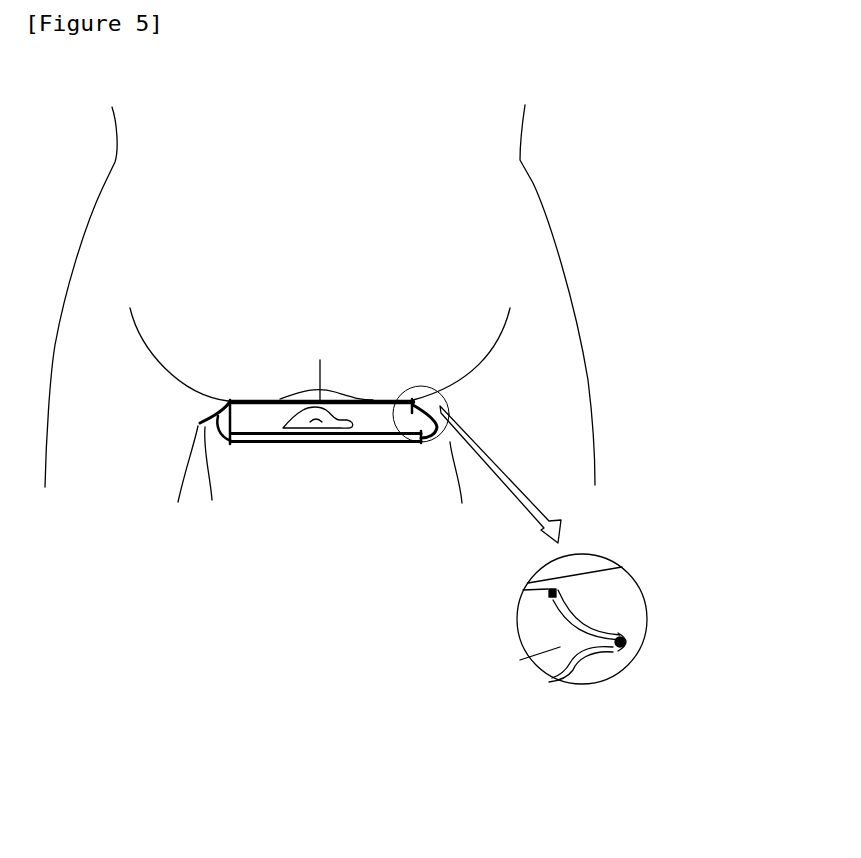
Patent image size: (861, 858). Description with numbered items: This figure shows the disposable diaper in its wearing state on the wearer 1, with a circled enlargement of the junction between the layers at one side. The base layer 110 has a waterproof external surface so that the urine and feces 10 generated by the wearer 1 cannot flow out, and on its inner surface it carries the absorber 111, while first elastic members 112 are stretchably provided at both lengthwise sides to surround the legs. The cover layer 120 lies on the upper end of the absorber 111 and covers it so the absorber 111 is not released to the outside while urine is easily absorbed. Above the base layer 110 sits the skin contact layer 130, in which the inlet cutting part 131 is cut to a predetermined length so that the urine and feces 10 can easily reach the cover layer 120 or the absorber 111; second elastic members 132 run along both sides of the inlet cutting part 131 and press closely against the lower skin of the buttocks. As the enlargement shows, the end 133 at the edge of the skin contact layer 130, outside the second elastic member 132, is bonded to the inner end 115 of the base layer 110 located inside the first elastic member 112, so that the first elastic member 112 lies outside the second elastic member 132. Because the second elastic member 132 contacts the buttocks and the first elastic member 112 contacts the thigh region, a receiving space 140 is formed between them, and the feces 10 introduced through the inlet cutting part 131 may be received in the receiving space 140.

The wearer 1 is at (458, 225).
The urine and feces 10 is at (345, 443).
The base layer 110 is at (275, 445).
The absorber 111 is at (297, 445).
The first elastic members 112 is at (690, 630).
The inner end 115 is at (612, 650).
The cover layer 120 is at (408, 443).
The skin contact layer 130 is at (413, 402).
The inlet cutting part 131 is at (322, 399).
The second elastic members 132 is at (224, 435).
The end 133 is at (600, 630).
The receiving space 140 is at (260, 418).